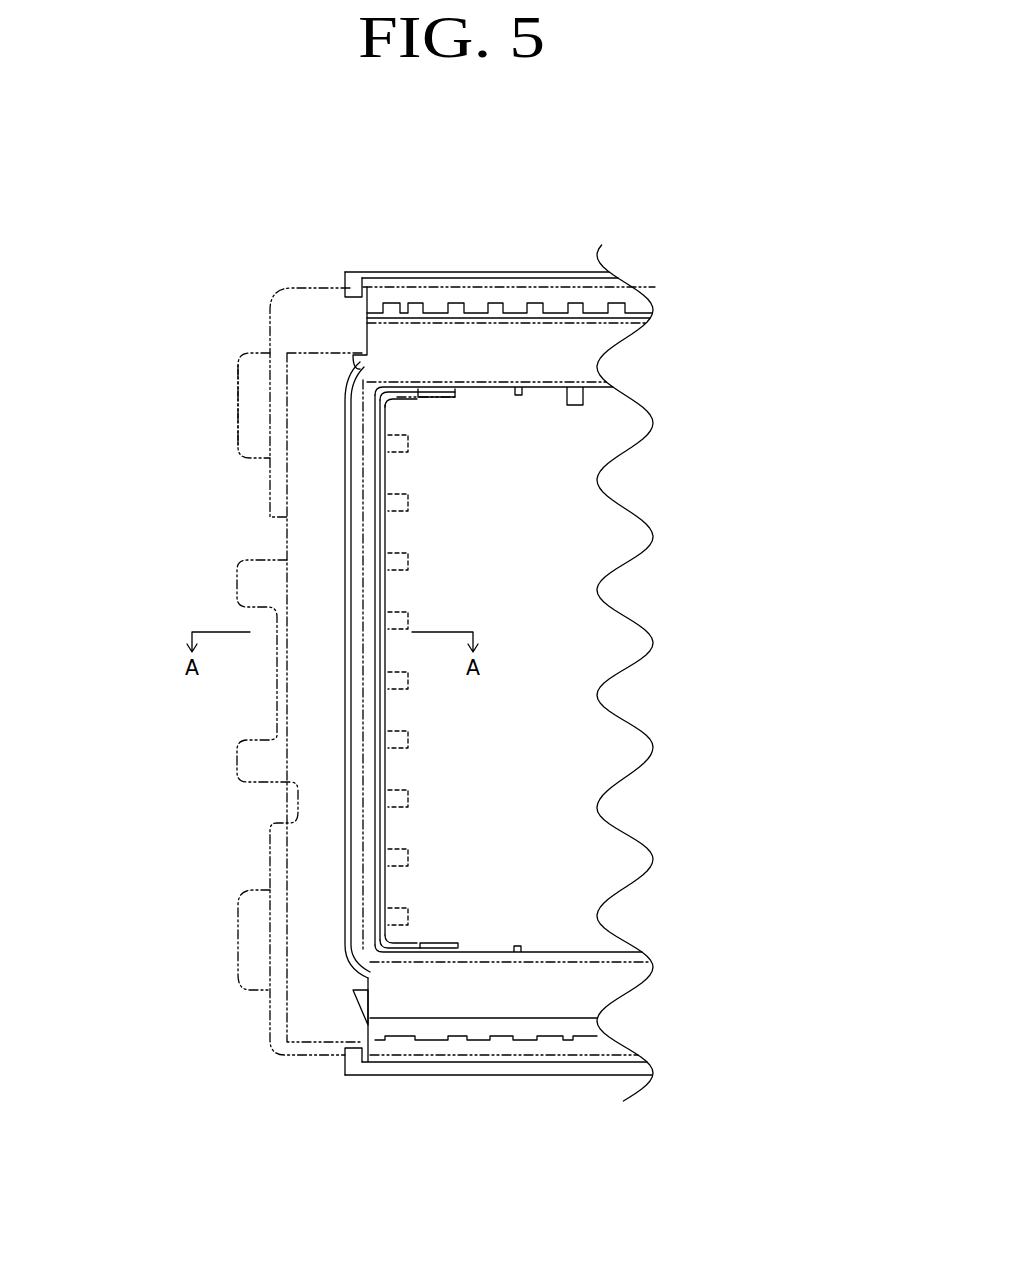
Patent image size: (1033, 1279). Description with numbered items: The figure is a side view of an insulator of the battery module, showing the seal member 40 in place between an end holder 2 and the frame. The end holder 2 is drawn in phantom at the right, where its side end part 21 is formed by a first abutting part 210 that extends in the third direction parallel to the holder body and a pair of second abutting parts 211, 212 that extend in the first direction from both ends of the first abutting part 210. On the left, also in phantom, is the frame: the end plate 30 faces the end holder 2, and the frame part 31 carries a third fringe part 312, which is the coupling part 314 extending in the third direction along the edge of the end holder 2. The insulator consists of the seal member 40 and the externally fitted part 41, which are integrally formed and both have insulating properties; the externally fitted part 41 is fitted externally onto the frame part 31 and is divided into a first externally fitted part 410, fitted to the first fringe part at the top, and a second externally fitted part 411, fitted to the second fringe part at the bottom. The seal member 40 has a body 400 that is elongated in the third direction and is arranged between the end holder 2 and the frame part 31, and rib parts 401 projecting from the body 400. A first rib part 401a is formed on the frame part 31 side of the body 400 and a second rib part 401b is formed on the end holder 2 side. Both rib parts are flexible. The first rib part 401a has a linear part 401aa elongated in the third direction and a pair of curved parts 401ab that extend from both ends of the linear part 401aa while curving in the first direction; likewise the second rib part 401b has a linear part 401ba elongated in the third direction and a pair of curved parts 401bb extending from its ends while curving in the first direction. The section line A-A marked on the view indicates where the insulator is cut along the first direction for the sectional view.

The end holder 2 is at (585, 561).
The side end part 21 is at (585, 672).
The first abutting part 210 is at (385, 707).
The second abutting part 211 is at (417, 400).
The second abutting part 212 is at (447, 945).
The end plate 30 is at (206, 634).
The frame part 31 is at (262, 343).
The third fringe part 312 is at (283, 472).
The coupling part 314 is at (165, 395).
The seal member 40 is at (269, 673).
The externally fitted part 41 is at (508, 676).
The first externally fitted part 410 is at (555, 338).
The second externally fitted part 411 is at (542, 1013).
The body 400 is at (235, 673).
The rib part 401 is at (291, 673).
The first rib part 401a is at (346, 798).
The linear part 401aa is at (353, 560).
The curved part 401ab is at (365, 337).
The second rib part 401b is at (315, 673).
The linear part 401ba is at (390, 910).
The curved part 401bb is at (407, 392).